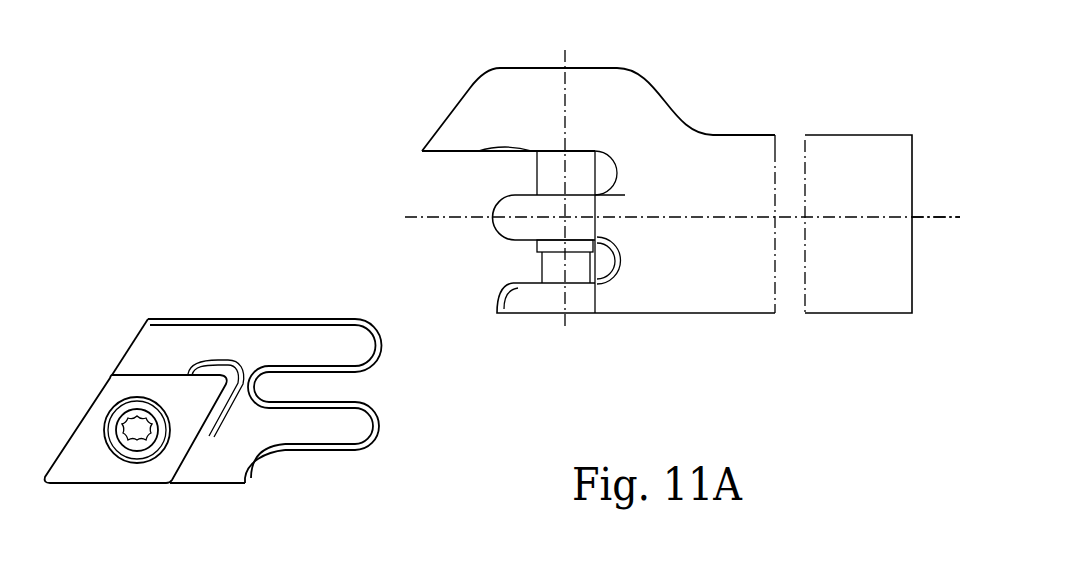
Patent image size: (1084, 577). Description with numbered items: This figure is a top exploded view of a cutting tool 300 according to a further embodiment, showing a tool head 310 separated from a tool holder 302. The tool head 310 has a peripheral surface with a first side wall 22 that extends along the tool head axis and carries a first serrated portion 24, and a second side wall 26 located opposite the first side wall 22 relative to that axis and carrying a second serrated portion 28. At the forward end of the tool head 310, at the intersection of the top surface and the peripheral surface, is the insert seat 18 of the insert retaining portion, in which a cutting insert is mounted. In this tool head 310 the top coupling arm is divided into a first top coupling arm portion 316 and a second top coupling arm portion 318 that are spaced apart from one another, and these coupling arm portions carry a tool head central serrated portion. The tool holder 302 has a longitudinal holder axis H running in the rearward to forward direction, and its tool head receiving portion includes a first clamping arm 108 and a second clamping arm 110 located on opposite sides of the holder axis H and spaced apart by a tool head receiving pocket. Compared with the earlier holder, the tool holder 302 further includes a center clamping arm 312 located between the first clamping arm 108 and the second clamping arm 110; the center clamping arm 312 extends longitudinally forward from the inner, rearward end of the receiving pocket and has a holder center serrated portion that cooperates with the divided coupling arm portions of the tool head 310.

The cutting tool 300 is at (276, 130).
The tool head 310 is at (148, 295).
The first side wall 22 is at (237, 317).
The first top coupling arm portion 316 is at (277, 338).
The first serrated portion 24 is at (337, 318).
The insert seat 18 is at (103, 381).
The second top coupling arm portion 318 is at (313, 438).
The second side wall 26 is at (342, 457).
The second serrated portion 28 is at (362, 453).
The first clamping arm 108 is at (493, 98).
The tool holder 302 is at (728, 72).
The center clamping arm 312 is at (510, 222).
The second clamping arm 110 is at (538, 307).
The holder axis H is at (941, 217).